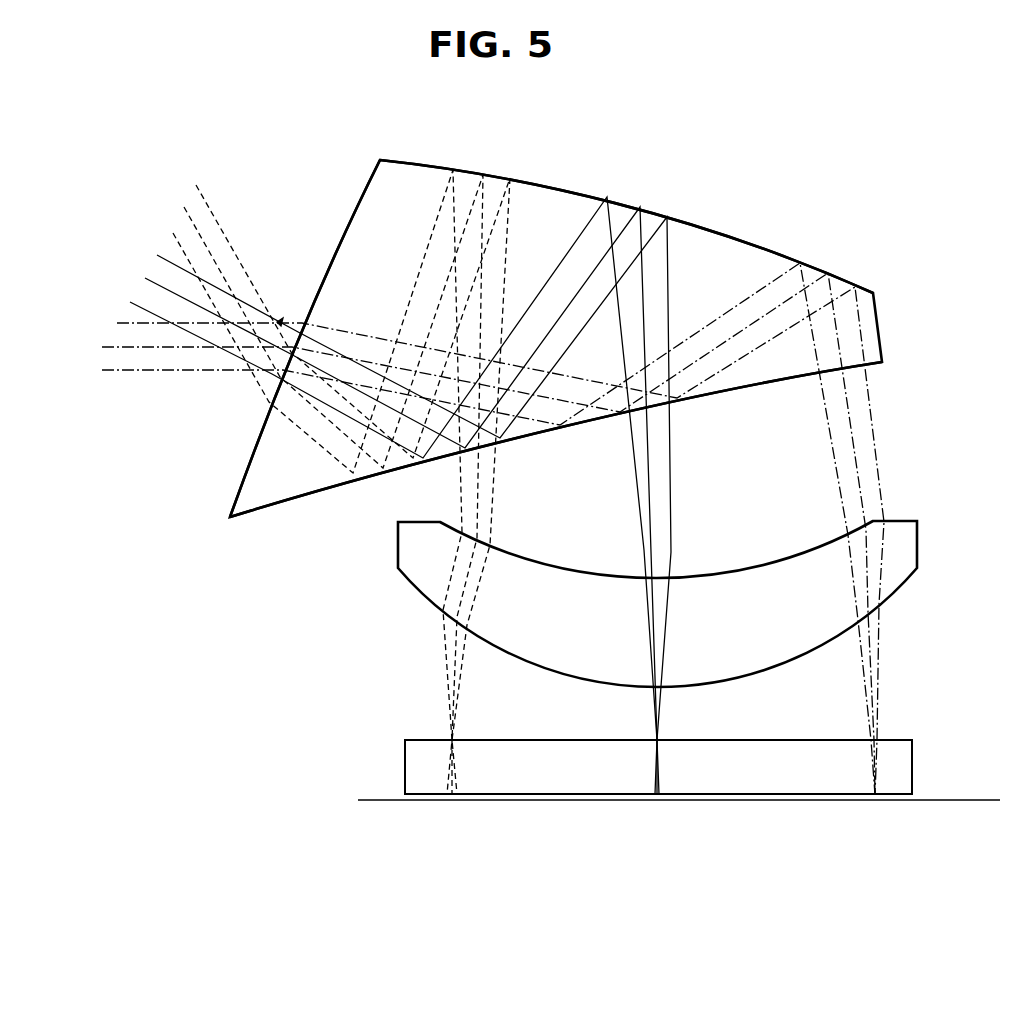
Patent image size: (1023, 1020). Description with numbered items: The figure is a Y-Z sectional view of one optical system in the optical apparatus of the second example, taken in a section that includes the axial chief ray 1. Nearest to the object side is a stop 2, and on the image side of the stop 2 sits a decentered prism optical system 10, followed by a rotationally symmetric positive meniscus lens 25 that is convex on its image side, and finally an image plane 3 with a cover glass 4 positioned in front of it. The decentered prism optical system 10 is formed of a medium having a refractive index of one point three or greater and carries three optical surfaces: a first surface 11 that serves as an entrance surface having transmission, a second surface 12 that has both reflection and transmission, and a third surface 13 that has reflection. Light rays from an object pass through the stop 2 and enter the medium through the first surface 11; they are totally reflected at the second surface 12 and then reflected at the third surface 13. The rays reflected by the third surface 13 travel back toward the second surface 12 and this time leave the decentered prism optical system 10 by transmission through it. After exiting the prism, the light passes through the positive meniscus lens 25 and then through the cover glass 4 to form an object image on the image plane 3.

The axial chief ray 1 is at (147, 279).
The stop 2 is at (252, 370).
The image plane 3 is at (732, 801).
The cover glass 4 is at (906, 768).
The decentered prism optical system 10 is at (700, 206).
The first surface 11 is at (250, 449).
The second surface 12 is at (577, 422).
The third surface 13 is at (582, 193).
The positive meniscus lens 25 is at (918, 548).